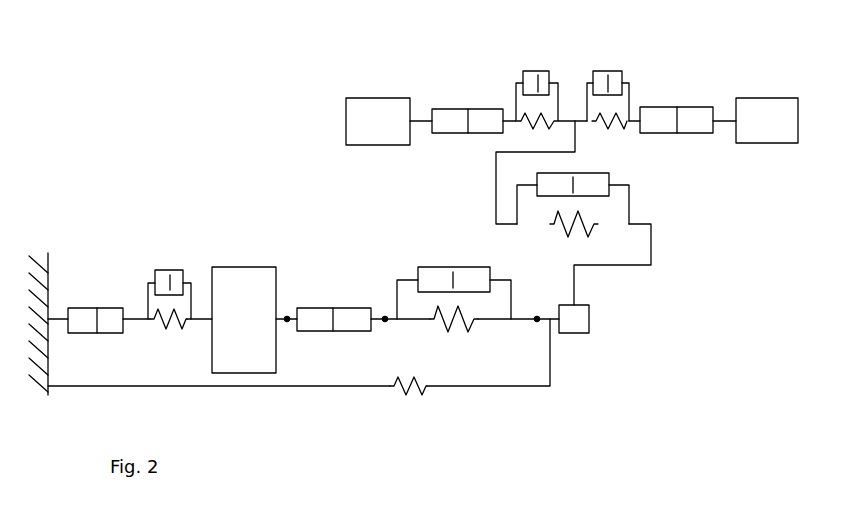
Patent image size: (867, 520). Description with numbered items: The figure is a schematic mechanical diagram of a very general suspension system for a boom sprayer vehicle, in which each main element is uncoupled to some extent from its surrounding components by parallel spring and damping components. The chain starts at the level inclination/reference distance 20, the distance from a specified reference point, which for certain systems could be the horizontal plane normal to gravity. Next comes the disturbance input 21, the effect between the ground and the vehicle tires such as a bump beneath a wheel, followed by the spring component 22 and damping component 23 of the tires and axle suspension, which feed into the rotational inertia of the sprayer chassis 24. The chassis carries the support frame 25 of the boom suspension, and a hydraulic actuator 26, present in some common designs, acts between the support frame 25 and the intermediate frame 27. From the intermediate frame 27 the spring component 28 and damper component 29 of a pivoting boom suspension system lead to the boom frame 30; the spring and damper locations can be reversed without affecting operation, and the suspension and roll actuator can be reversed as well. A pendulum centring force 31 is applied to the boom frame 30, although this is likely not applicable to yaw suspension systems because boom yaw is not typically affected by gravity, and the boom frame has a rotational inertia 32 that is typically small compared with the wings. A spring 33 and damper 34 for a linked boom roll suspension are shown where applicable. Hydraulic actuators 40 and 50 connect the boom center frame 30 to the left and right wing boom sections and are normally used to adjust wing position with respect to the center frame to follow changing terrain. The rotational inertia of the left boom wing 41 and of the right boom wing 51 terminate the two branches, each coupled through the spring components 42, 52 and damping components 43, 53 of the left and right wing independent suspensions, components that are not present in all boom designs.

The level inclination/reference distance 20 is at (50, 263).
The disturbance input 21 is at (86, 310).
The spring component of tires and axle suspension 22 is at (170, 336).
The damping component of tires and axle suspension 23 is at (166, 270).
The rotational inertia of the sprayer chassis 24 is at (244, 320).
The support frame of the boom suspension 25 is at (289, 317).
The hydraulic actuator 26 is at (340, 333).
The intermediate frame 27 is at (385, 322).
The spring component of pivoting boom suspension 28 is at (469, 329).
The damper component of pivoting boom suspension 29 is at (449, 264).
The boom frame 30 is at (537, 315).
The pendulum centring force 31 is at (413, 399).
The rotational inertia of boom frame 32 is at (578, 320).
The spring for linked boom roll suspension 33 is at (584, 233).
The damper for linked boom roll suspension 34 is at (612, 178).
The hydraulic actuator 40 is at (455, 109).
The rotational inertia of the left boom wing 41 is at (378, 121).
The spring component of left wing independent suspension 42 is at (538, 128).
The damping component of left wing independent suspension 43 is at (537, 70).
The hydraulic actuator 50 is at (692, 107).
The rotational inertia of the right boom wing 51 is at (767, 120).
The spring component of right wing independent suspension 52 is at (613, 128).
The damping component of right wing independent suspension 53 is at (608, 70).